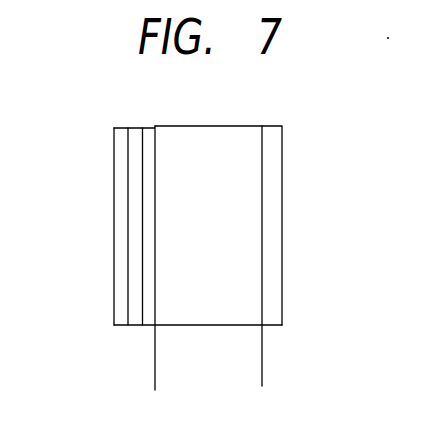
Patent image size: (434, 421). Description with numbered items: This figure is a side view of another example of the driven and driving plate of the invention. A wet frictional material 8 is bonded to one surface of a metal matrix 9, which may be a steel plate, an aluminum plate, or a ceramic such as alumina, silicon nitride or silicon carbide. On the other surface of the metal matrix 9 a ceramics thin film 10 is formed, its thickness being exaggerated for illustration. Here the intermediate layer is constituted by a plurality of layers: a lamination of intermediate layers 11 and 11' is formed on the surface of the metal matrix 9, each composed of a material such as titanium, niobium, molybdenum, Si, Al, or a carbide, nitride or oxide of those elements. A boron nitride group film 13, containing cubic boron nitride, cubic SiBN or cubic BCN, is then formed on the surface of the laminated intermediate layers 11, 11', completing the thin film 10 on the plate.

The wet frictional material 8 is at (275, 128).
The metal matrix 9 is at (197, 130).
The ceramics thin film 10 is at (108, 228).
The intermediate layer 11 is at (156, 236).
The intermediate layer 11' is at (112, 203).
The boron nitride group film 13 is at (115, 165).